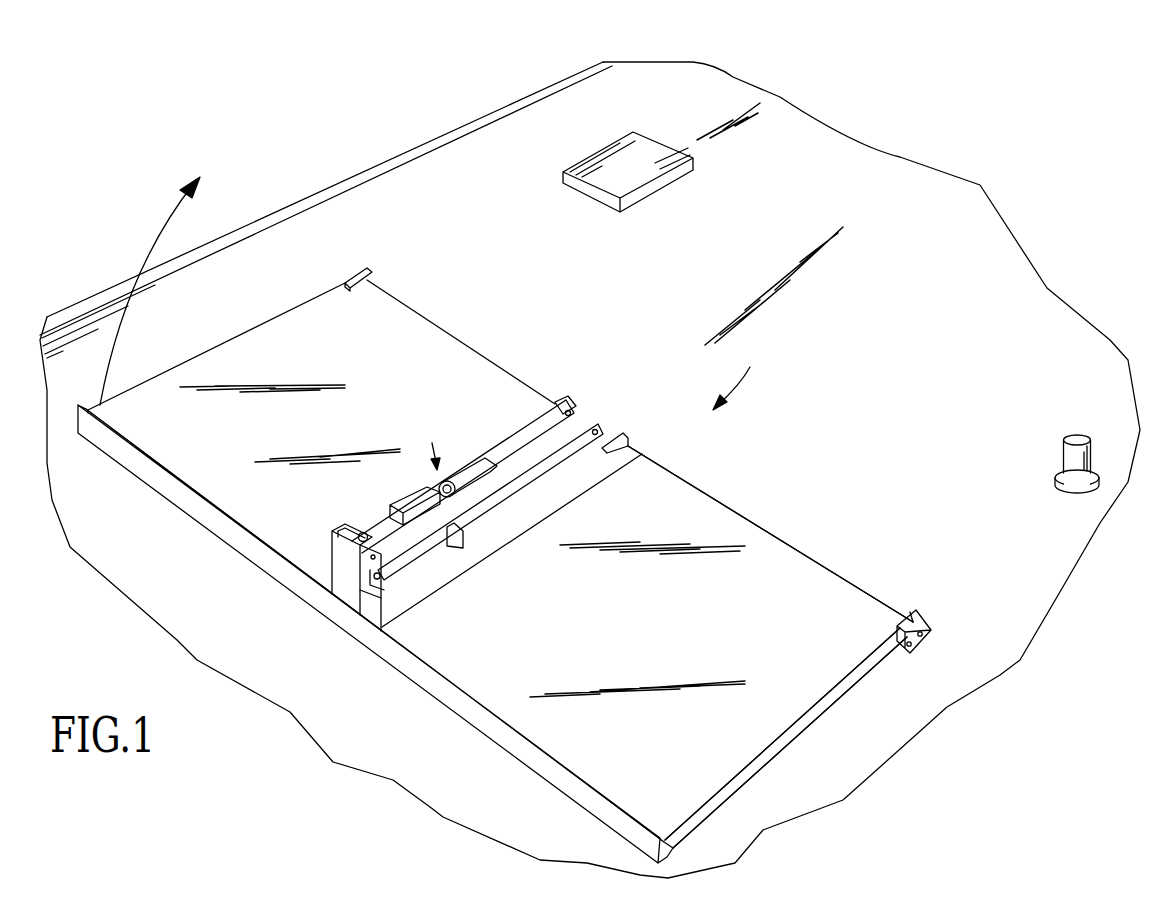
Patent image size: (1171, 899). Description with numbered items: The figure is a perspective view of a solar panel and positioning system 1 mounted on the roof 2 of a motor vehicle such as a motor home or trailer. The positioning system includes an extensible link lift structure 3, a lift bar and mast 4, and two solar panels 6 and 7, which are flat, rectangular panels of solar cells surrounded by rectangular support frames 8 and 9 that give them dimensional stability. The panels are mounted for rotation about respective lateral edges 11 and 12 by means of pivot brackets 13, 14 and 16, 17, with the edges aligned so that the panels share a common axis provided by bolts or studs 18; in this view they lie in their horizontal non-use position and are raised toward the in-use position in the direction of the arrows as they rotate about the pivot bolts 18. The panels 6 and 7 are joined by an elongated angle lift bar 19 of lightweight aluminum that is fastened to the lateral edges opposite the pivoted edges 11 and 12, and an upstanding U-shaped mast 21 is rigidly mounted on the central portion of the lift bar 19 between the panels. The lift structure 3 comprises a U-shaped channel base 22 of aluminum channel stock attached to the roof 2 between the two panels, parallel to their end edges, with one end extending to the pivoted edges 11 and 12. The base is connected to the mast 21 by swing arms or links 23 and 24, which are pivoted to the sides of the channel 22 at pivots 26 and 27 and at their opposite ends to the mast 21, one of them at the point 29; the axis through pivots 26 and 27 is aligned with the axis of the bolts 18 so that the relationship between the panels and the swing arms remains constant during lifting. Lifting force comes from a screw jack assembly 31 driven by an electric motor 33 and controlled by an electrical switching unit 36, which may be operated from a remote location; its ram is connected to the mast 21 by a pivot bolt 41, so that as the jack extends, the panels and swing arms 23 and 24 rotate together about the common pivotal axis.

The solar panel and positioning system 1 is at (738, 376).
The roof 2 is at (1020, 262).
The extensible link lift structure 3 is at (431, 443).
The lift bar and mast 4 is at (341, 640).
The solar panel 6 is at (328, 420).
The solar panel 7 is at (646, 626).
The rectangular support frame 8 is at (840, 688).
The rectangular support frame 9 is at (243, 336).
The lateral edge 11 is at (490, 365).
The lateral edge 12 is at (715, 498).
The pivot bracket 13 is at (372, 273).
The pivot bracket 14 is at (558, 404).
The pivot bracket 16 is at (628, 436).
The pivot bracket 17 is at (928, 624).
The pivot bolt 18 is at (912, 620).
The elongated angle lift bar 19 is at (462, 708).
The U-shaped mast 21 is at (375, 600).
The U-shaped channel base 22 is at (448, 545).
The swing arm 23 is at (480, 453).
The swing arm 24 is at (572, 447).
The pivot 26 is at (572, 410).
The pivot 27 is at (600, 430).
The pivot point 29 is at (383, 578).
The screw jack assembly 31 is at (385, 522).
The electric motor 33 is at (463, 478).
The electrical switching unit 36 is at (415, 500).
The pivot bolt 41 is at (330, 546).